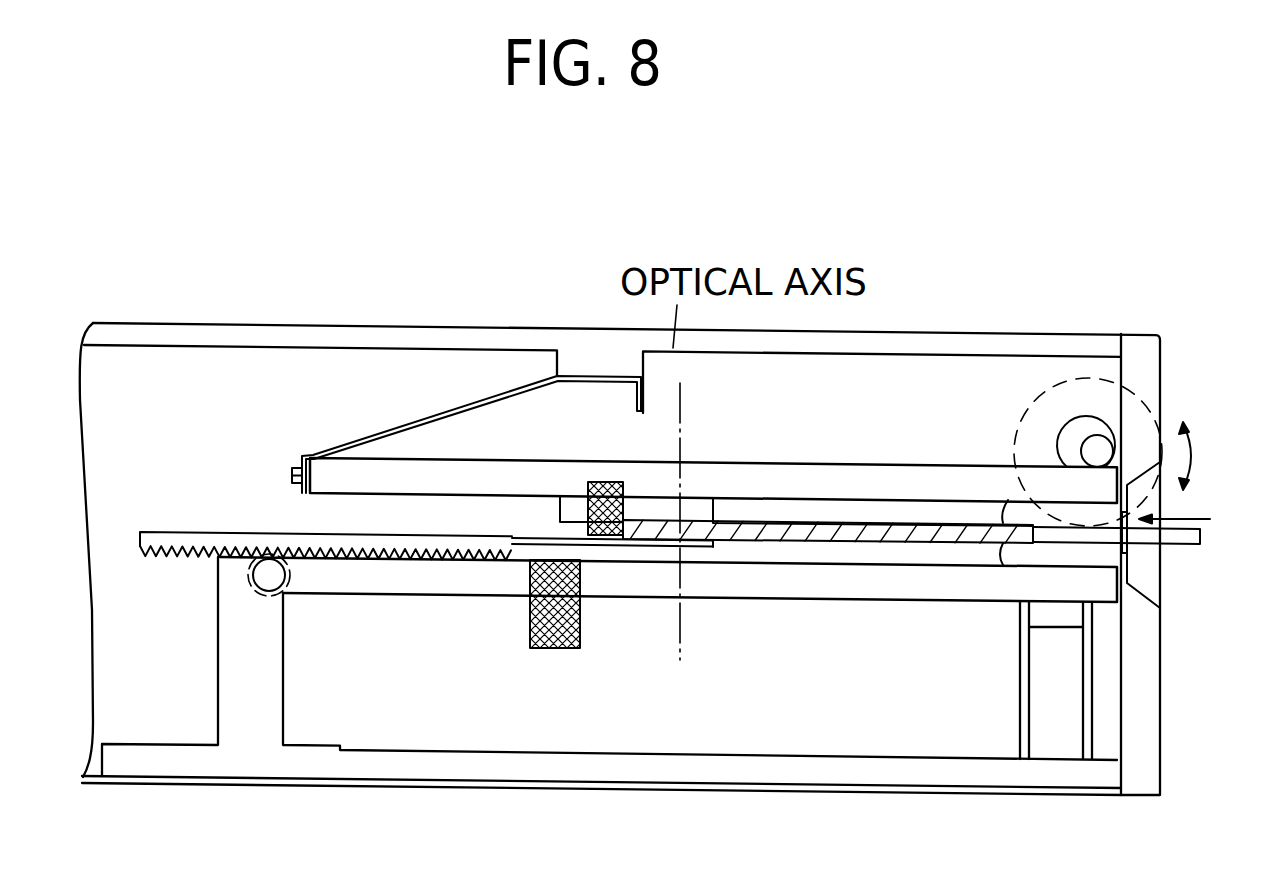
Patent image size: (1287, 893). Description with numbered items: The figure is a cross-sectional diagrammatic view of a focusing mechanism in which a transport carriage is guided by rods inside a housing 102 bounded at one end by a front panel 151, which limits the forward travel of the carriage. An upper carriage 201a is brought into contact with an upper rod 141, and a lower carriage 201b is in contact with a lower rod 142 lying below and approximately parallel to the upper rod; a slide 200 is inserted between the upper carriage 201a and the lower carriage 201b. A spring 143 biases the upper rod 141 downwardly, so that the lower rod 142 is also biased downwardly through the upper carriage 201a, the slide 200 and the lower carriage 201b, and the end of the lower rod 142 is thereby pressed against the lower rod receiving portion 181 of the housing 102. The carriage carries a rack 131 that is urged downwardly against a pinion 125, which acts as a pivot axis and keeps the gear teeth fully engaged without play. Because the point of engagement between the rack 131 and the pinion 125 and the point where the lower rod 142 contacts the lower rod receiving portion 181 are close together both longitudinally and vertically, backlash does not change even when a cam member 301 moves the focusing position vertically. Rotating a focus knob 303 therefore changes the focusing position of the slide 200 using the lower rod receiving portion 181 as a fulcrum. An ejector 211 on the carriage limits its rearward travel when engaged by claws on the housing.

The housing 102 is at (373, 773).
The pinion 125 is at (255, 585).
The rack 131 is at (187, 537).
The upper rod 141 is at (947, 477).
The lower rod 142 is at (927, 588).
The spring 143 is at (490, 393).
The front panel 151 is at (1135, 740).
The lower rod receiving portion 181 is at (268, 596).
The slide 200 is at (837, 530).
The upper carriage 201a is at (890, 508).
The lower carriage 201b is at (725, 550).
The ejector 211 is at (547, 648).
The cam member 301 is at (1088, 427).
The focus knob 303 is at (1150, 412).